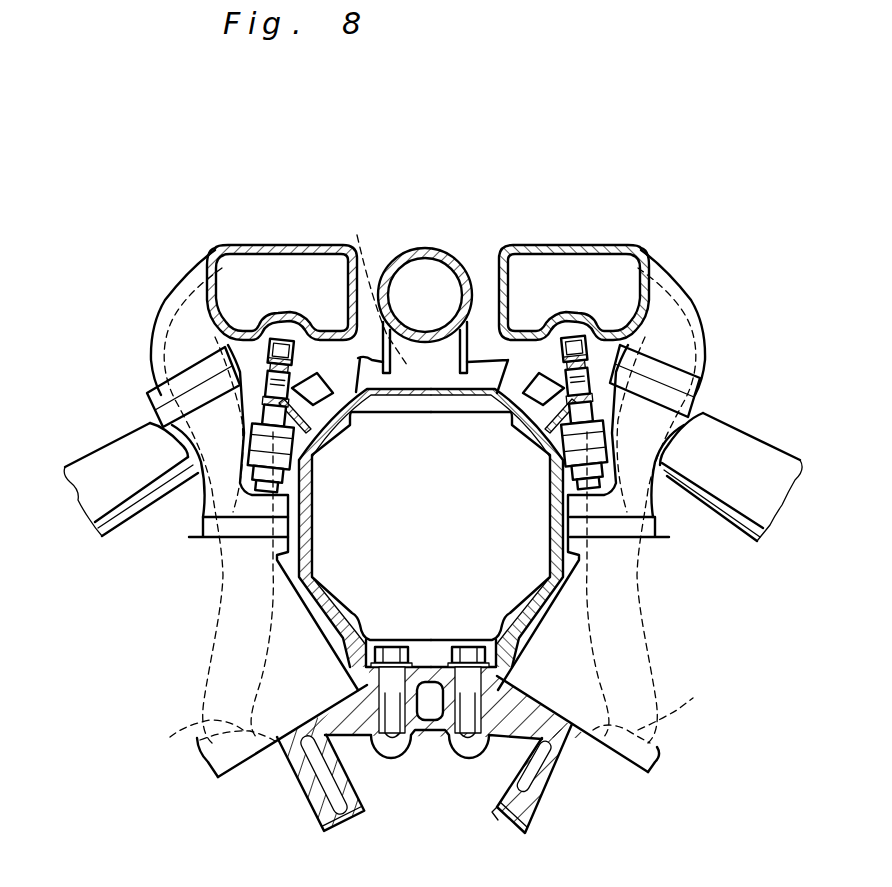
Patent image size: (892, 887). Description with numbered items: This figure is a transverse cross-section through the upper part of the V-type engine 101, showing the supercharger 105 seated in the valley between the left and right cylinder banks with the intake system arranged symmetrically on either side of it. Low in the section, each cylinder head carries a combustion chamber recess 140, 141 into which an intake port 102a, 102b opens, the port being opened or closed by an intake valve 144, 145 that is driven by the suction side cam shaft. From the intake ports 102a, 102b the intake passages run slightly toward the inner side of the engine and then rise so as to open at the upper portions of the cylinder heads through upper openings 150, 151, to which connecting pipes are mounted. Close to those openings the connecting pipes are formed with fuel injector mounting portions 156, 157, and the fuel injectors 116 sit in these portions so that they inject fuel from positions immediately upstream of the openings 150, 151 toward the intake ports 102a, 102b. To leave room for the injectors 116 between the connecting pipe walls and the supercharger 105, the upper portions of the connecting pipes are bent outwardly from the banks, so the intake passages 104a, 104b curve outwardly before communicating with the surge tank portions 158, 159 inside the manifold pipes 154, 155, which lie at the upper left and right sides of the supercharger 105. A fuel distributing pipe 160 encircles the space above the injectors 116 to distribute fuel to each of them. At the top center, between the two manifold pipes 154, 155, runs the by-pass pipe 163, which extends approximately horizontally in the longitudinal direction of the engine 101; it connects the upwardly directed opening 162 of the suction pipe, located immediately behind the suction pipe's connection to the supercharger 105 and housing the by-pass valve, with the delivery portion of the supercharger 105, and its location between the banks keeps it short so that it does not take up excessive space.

The engine 101 is at (593, 130).
The intake port 102a is at (197, 738).
The intake port 102b is at (693, 698).
The intake passage 104a is at (166, 422).
The intake passage 104b is at (702, 413).
The supercharger 105 is at (462, 513).
The fuel injector 116 is at (263, 443).
The combustion chamber recess 140 is at (243, 748).
The combustion chamber recess 141 is at (623, 747).
The intake valve 144 is at (207, 495).
The intake valve 145 is at (647, 487).
The upper opening 150 is at (268, 532).
The upper opening 151 is at (623, 573).
The manifold pipe 154 is at (245, 244).
The manifold pipe 155 is at (556, 244).
The fuel injector mounting portion 156 is at (240, 497).
The fuel injector mounting portion 157 is at (620, 540).
The surge tank portion 158 is at (313, 300).
The surge tank portion 159 is at (585, 300).
The fuel distributing pipe 160 is at (283, 347).
The opening 162 is at (357, 235).
The by-pass pipe 163 is at (437, 247).